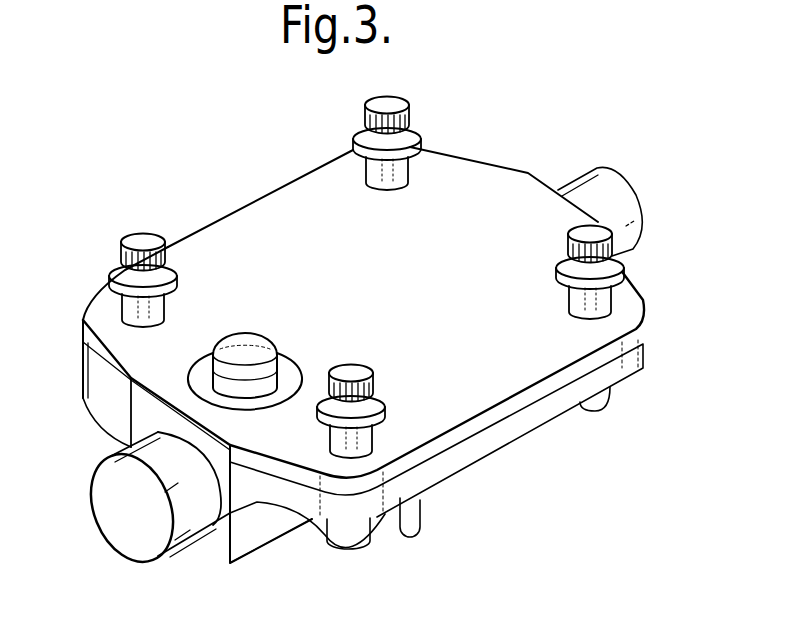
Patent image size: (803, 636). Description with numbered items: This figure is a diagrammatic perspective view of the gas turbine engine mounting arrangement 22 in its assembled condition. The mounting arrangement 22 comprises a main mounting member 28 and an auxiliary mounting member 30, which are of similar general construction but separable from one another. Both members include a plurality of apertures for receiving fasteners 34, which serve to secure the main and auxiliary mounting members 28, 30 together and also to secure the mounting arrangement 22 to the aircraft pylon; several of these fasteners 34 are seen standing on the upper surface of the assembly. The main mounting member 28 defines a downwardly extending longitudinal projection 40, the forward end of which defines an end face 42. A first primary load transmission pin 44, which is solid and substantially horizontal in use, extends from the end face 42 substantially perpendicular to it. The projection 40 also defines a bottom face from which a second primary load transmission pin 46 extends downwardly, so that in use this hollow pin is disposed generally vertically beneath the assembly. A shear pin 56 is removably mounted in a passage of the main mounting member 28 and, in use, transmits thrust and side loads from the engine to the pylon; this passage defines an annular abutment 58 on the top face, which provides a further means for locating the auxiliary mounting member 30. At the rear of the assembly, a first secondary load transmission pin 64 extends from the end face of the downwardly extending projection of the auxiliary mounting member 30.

The mounting arrangement 22 is at (505, 127).
The main mounting member 28 is at (500, 440).
The auxiliary mounting member 30 is at (296, 205).
The fasteners 34 is at (388, 104).
The longitudinal projection 40 is at (279, 520).
The end face 42 is at (203, 547).
The first primary load transmission pin 44 is at (117, 522).
The second primary load transmission pin 46 is at (400, 533).
The shear pin 56 is at (244, 345).
The annular abutment 58 is at (198, 371).
The first secondary load transmission pin 64 is at (613, 182).